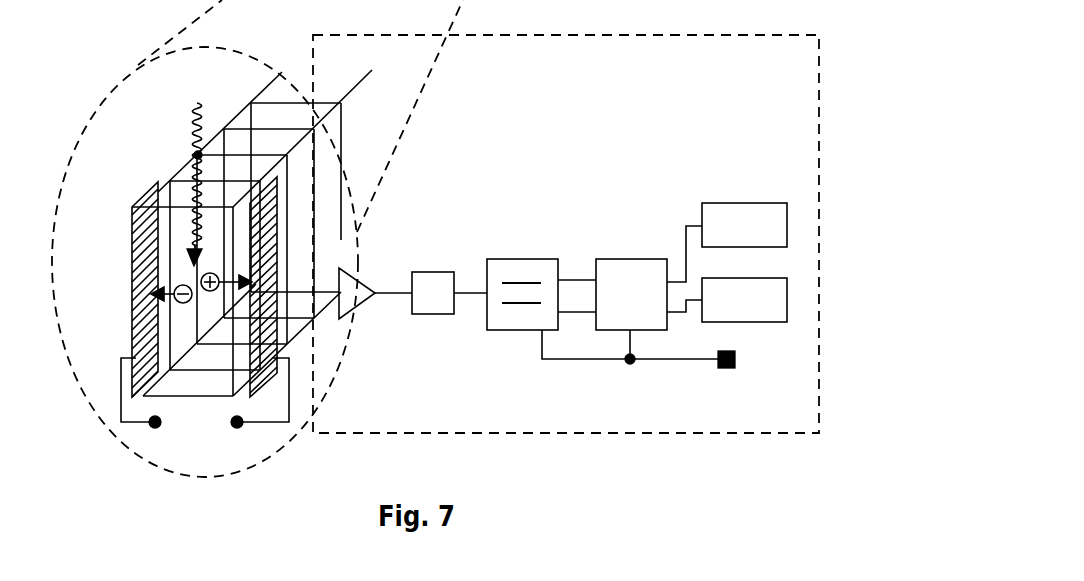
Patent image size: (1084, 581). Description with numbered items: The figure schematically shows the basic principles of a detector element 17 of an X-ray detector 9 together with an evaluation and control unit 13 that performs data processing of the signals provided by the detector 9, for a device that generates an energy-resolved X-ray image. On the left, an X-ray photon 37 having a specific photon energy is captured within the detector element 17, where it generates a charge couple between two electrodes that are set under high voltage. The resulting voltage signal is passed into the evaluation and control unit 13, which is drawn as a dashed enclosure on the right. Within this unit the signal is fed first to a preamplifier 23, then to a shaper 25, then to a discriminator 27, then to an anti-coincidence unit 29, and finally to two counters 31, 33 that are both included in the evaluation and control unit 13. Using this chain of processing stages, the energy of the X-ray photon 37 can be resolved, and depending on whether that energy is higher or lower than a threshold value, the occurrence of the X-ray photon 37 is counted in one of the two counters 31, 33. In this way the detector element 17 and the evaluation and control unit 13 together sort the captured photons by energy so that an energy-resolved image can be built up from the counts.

The detector 9 is at (114, 255).
The detector element 17 is at (116, 316).
The X-ray photon 37 is at (188, 129).
The preamplifier 23 is at (353, 308).
The shaper 25 is at (428, 315).
The discriminator 27 is at (532, 331).
The anti-coincidence unit 29 is at (617, 331).
The counter 31 is at (746, 203).
The counter 33 is at (762, 322).
The evaluation and control unit 13 is at (620, 433).